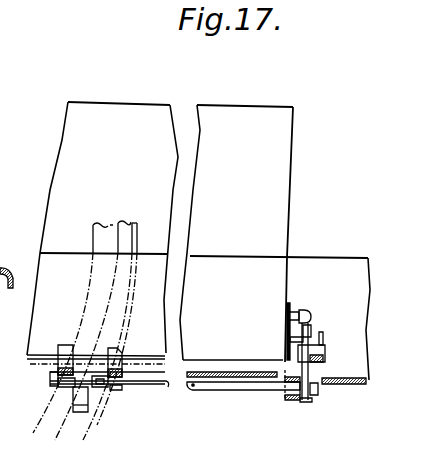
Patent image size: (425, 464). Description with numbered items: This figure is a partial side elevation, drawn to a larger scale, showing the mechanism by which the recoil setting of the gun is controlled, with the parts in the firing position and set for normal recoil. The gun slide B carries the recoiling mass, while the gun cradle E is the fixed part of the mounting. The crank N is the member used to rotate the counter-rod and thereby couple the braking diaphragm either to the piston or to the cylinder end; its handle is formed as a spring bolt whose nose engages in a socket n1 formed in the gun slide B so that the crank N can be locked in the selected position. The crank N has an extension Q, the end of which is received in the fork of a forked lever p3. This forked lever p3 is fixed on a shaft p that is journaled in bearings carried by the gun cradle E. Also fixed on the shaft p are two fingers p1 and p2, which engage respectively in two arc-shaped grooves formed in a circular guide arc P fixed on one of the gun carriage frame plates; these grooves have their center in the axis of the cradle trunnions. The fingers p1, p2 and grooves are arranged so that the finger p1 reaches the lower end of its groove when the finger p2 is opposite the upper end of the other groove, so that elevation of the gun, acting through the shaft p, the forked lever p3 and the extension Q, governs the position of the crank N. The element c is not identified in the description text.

The circular guide arc P is at (93, 232).
The shaft p is at (192, 388).
The finger p1 is at (102, 378).
The finger p2 is at (85, 381).
The forked lever p3 is at (305, 370).
The plate c is at (278, 208).
The slide B is at (222, 355).
The extension Q is at (298, 339).
The crank N is at (300, 316).
The socket n1 is at (283, 313).
The gun cradle E is at (356, 384).